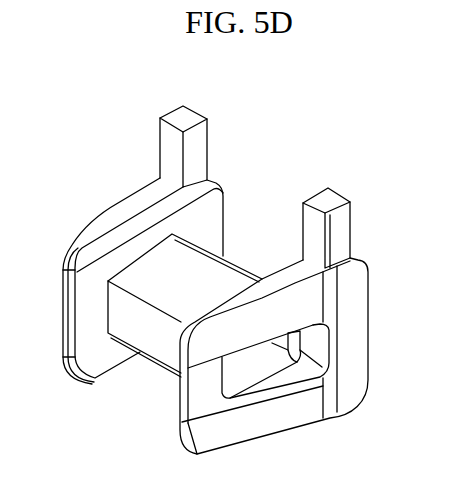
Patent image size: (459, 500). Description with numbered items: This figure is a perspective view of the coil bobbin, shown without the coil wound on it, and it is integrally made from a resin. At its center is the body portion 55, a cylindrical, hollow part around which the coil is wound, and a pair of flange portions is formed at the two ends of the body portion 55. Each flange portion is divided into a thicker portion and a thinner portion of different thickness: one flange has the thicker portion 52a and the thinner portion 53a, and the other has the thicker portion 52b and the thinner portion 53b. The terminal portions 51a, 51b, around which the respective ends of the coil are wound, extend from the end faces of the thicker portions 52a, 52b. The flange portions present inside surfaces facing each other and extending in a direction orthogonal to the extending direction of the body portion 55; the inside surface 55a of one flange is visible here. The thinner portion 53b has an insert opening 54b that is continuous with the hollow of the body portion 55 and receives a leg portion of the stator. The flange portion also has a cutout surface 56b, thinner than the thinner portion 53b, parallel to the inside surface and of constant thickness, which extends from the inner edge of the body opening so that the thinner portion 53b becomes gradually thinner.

The terminal portion 51a is at (186, 117).
The terminal portion 51b is at (337, 193).
The thicker portion 52a is at (138, 180).
The thicker portion 52b is at (358, 300).
The thinner portion 53a is at (125, 213).
The thinner portion 53b is at (293, 417).
The insert opening 54b is at (243, 393).
The body portion 55 is at (160, 352).
The inside surface 55a is at (213, 229).
The cutout surface 56b is at (196, 394).